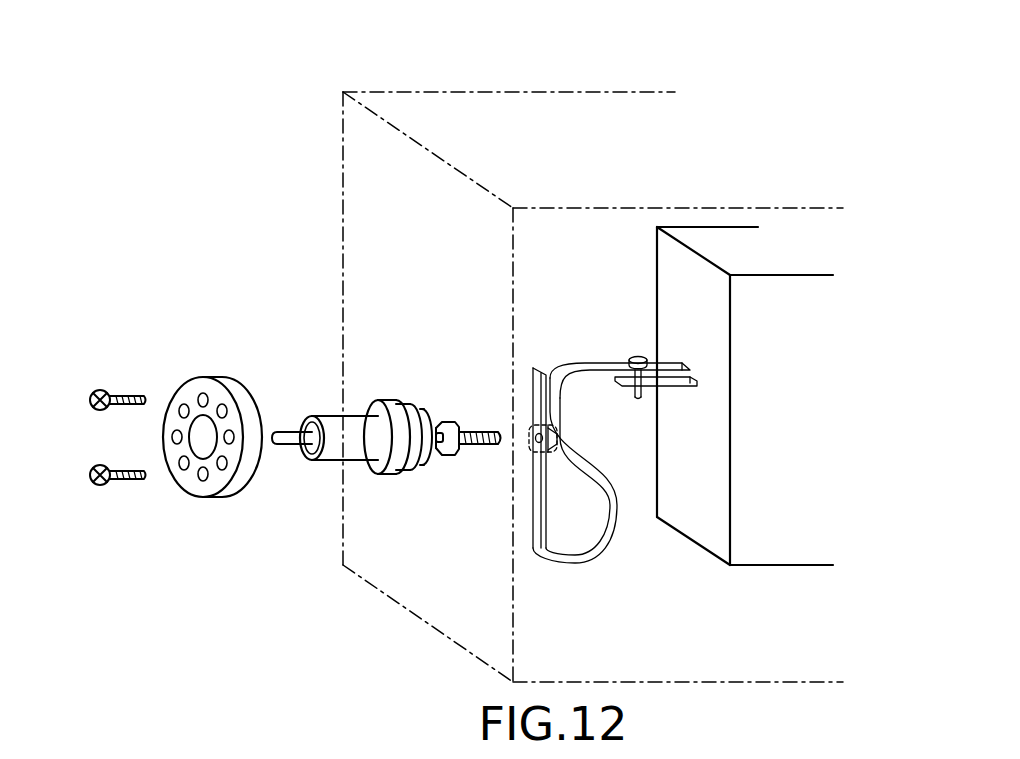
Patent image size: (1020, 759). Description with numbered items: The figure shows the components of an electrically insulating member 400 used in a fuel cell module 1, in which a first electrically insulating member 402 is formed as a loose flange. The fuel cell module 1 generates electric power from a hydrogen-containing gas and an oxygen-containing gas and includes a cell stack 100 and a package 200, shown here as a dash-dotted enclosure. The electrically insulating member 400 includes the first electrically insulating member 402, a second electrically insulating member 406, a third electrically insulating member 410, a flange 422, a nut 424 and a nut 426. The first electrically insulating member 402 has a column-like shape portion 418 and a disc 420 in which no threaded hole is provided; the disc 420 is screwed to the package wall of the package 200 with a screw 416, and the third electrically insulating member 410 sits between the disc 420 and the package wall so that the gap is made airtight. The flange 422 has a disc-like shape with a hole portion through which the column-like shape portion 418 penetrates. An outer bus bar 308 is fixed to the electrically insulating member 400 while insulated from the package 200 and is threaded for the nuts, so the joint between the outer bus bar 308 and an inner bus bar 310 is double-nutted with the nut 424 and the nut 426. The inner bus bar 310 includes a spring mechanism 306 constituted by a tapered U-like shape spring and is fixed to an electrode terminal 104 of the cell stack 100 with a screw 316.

The fuel cell module 1 is at (718, 86).
The cell stack 100 is at (787, 563).
The electrode terminal 104 is at (678, 388).
The package 200 is at (492, 92).
The spring mechanism 306 is at (580, 565).
The outer bus bar 308 is at (289, 455).
The inner bus bar 310 is at (618, 464).
The screw 316 is at (638, 357).
The electrically insulating member 400 is at (295, 406).
The first electrically insulating member 402 is at (375, 437).
The second electrically insulating member 406 is at (313, 460).
The third electrically insulating member 410 is at (421, 404).
The screw 416 is at (118, 391).
The column-like shape portion 418 is at (355, 461).
The disc 420 is at (390, 399).
The flange 422 is at (207, 495).
The nut 424 is at (555, 454).
The nut 426 is at (443, 457).